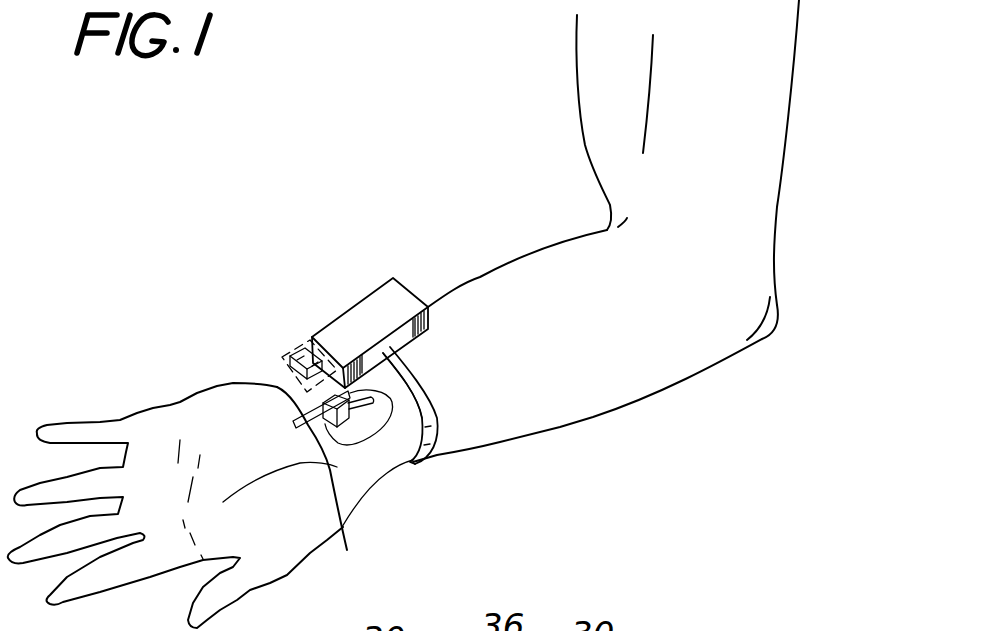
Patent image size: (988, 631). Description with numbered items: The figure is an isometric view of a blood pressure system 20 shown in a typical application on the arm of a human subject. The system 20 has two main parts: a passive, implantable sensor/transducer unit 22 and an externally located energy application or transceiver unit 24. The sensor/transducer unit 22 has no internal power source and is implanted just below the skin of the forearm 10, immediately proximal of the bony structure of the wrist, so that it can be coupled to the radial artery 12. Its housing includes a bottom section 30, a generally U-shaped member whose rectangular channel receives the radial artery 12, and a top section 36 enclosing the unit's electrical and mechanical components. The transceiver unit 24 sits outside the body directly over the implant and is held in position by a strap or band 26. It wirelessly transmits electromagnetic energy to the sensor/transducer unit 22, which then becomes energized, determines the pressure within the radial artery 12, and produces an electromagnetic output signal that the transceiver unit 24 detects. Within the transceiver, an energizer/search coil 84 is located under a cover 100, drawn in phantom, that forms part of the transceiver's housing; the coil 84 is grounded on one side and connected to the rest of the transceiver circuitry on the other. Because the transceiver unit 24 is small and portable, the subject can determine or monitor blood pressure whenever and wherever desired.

The forearm 10 is at (582, 393).
The radial artery 12 is at (335, 495).
The blood pressure system 20 is at (350, 335).
The sensor/transducer unit 22 is at (355, 447).
The energy application or transceiver unit 24 is at (343, 300).
The strap or band 26 is at (428, 408).
The bottom section 30 is at (350, 430).
The top section 36 is at (383, 377).
The energizer/search coil 84 is at (305, 365).
The cover 100 is at (281, 356).